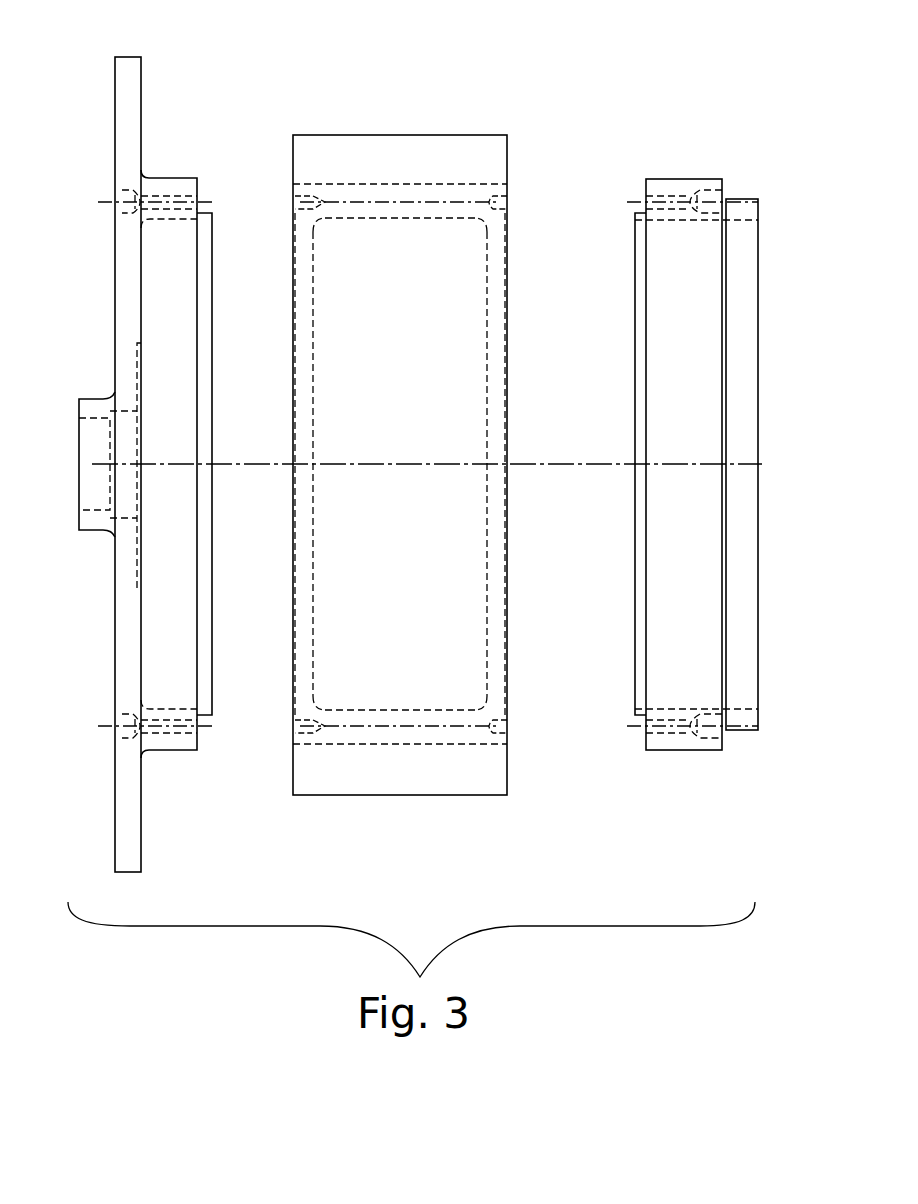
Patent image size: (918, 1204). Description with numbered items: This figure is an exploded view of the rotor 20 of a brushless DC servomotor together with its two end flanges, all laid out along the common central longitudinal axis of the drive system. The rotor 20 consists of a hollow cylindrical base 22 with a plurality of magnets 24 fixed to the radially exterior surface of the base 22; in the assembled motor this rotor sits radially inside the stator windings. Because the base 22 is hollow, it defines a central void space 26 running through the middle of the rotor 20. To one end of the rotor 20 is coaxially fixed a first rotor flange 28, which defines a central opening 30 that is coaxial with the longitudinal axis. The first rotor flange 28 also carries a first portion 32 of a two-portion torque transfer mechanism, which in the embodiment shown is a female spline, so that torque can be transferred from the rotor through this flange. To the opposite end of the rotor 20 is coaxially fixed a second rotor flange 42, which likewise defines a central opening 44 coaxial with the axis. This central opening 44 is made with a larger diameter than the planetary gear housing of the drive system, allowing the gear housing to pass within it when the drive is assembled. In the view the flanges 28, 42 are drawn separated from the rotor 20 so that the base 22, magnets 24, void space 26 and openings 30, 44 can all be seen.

The rotor 20 is at (383, 97).
The hollow cylindrical base 22 is at (488, 195).
The magnets 24 is at (462, 145).
The central void space 26 is at (430, 427).
The first rotor flange 28 is at (123, 65).
The central opening 30 is at (80, 503).
The first portion of torque transfer mechanism 32 is at (80, 420).
The second rotor flange 42 is at (678, 179).
The central opening 44 is at (688, 348).